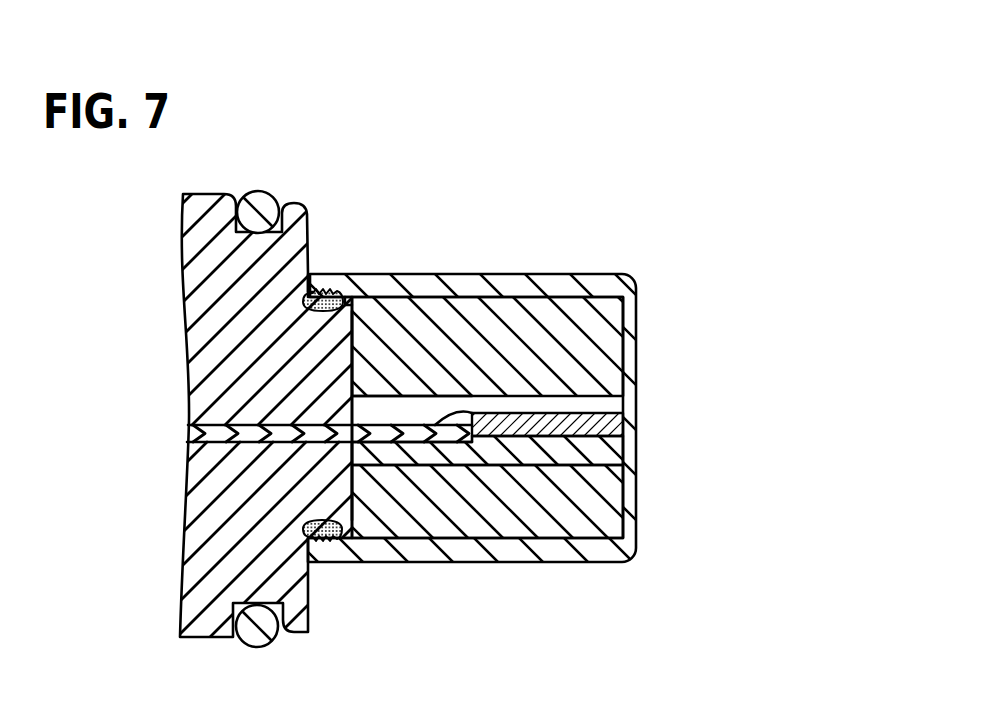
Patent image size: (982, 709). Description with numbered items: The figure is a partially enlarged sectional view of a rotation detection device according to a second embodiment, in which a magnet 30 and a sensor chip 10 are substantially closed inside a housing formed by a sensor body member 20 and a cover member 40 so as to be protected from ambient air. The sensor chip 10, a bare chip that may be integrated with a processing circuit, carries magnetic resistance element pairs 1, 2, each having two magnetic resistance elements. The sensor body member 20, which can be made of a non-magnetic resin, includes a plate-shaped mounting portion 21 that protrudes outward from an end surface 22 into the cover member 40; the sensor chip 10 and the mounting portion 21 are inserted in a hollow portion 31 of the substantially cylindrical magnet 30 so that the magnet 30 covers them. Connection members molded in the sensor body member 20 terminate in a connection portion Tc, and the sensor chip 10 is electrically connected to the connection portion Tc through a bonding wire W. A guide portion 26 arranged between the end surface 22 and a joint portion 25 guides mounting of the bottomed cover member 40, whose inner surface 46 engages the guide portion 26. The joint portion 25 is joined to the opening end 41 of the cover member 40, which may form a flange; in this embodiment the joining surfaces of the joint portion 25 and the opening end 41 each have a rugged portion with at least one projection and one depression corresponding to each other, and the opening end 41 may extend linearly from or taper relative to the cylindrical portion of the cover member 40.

The magnetic resistance element pair 1 is at (579, 412).
The magnetic resistance element pair 2 is at (601, 430).
The sensor chip 10 is at (563, 430).
The sensor body member 20 is at (227, 568).
The mounting portion 21 is at (505, 452).
The end surface 22 is at (354, 332).
The joint portion 25 is at (327, 542).
The guide portion 26 is at (340, 294).
The magnet 30 is at (587, 528).
The hollow portion 31 is at (416, 408).
The cover member 40 is at (573, 274).
The opening end 41 is at (313, 289).
The inner surface 46 is at (362, 305).
The bonding wire W is at (452, 400).
The connection portion Tc is at (413, 450).